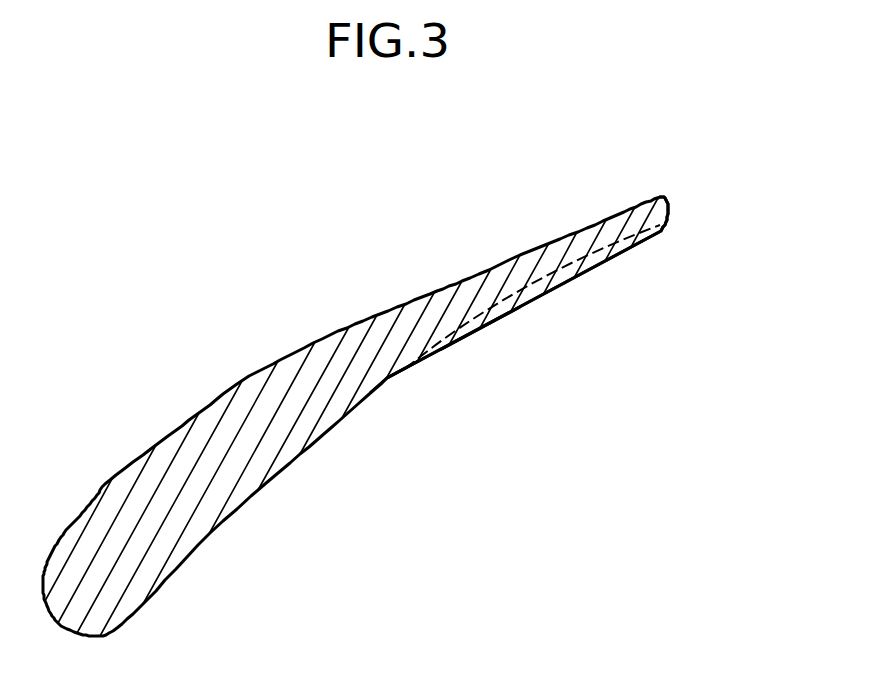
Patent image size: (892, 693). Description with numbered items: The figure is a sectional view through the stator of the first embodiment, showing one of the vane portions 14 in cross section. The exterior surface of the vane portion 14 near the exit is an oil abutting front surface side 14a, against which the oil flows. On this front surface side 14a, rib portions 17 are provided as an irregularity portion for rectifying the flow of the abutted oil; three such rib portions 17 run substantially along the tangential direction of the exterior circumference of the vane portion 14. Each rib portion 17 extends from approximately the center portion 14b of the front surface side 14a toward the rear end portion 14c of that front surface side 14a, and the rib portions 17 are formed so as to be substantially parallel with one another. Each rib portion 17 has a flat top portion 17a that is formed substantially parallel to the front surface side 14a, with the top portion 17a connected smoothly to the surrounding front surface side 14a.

The vane portion 14 is at (669, 192).
The oil abutting front surface side 14a is at (500, 335).
The center portion 14b is at (388, 380).
The rear end portion 14c is at (668, 226).
The rib portion 17 is at (577, 275).
The flat top portion 17a is at (527, 303).